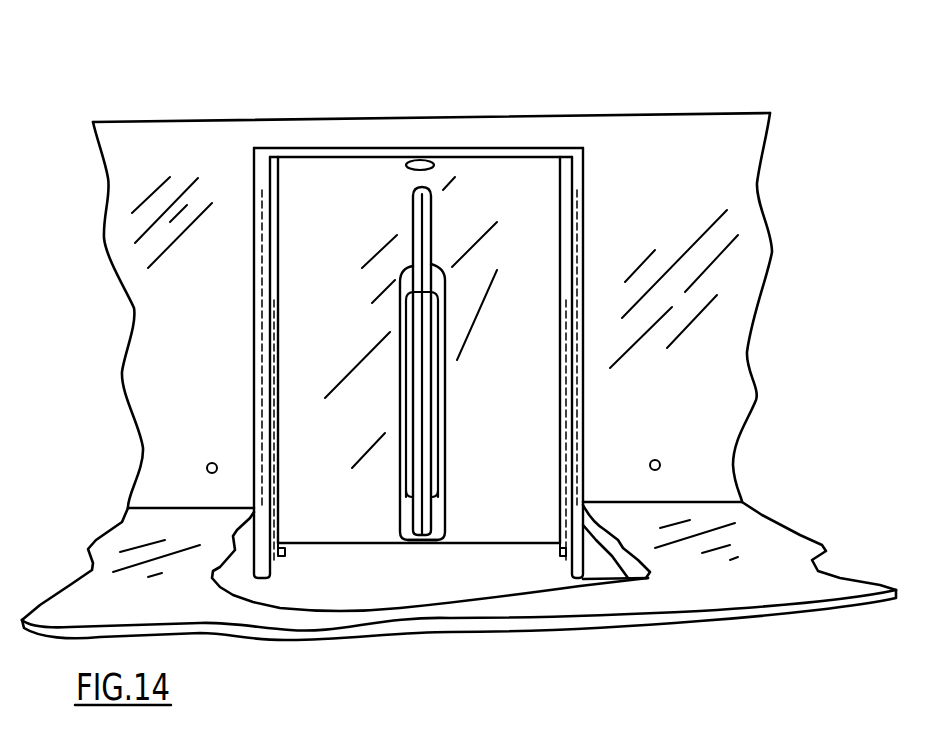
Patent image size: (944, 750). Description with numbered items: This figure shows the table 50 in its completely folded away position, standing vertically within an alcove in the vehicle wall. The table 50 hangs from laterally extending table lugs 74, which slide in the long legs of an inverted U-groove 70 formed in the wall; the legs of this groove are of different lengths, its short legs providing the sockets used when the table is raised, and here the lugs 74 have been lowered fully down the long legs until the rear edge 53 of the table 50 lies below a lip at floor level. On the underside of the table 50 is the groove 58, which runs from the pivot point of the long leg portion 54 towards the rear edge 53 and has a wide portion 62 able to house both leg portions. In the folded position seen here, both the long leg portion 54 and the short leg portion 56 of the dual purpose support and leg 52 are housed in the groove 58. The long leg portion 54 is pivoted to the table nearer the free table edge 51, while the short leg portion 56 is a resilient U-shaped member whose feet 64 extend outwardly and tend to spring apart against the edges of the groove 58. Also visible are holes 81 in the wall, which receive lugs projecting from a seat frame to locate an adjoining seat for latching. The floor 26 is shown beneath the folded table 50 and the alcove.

The floor 26 is at (712, 602).
The table 50 is at (533, 182).
The free table edge 51 is at (365, 155).
The dual purpose support and leg 52 is at (422, 453).
The rear edge 53 is at (372, 548).
The long leg portion 54 is at (422, 416).
The short leg portion 56 is at (437, 318).
The groove 58 is at (405, 274).
The wide portion 62 is at (433, 262).
The feet 64 is at (411, 543).
The inverted U-groove 70 is at (263, 285).
The table lugs 74 is at (287, 546).
The holes 81 is at (208, 463).